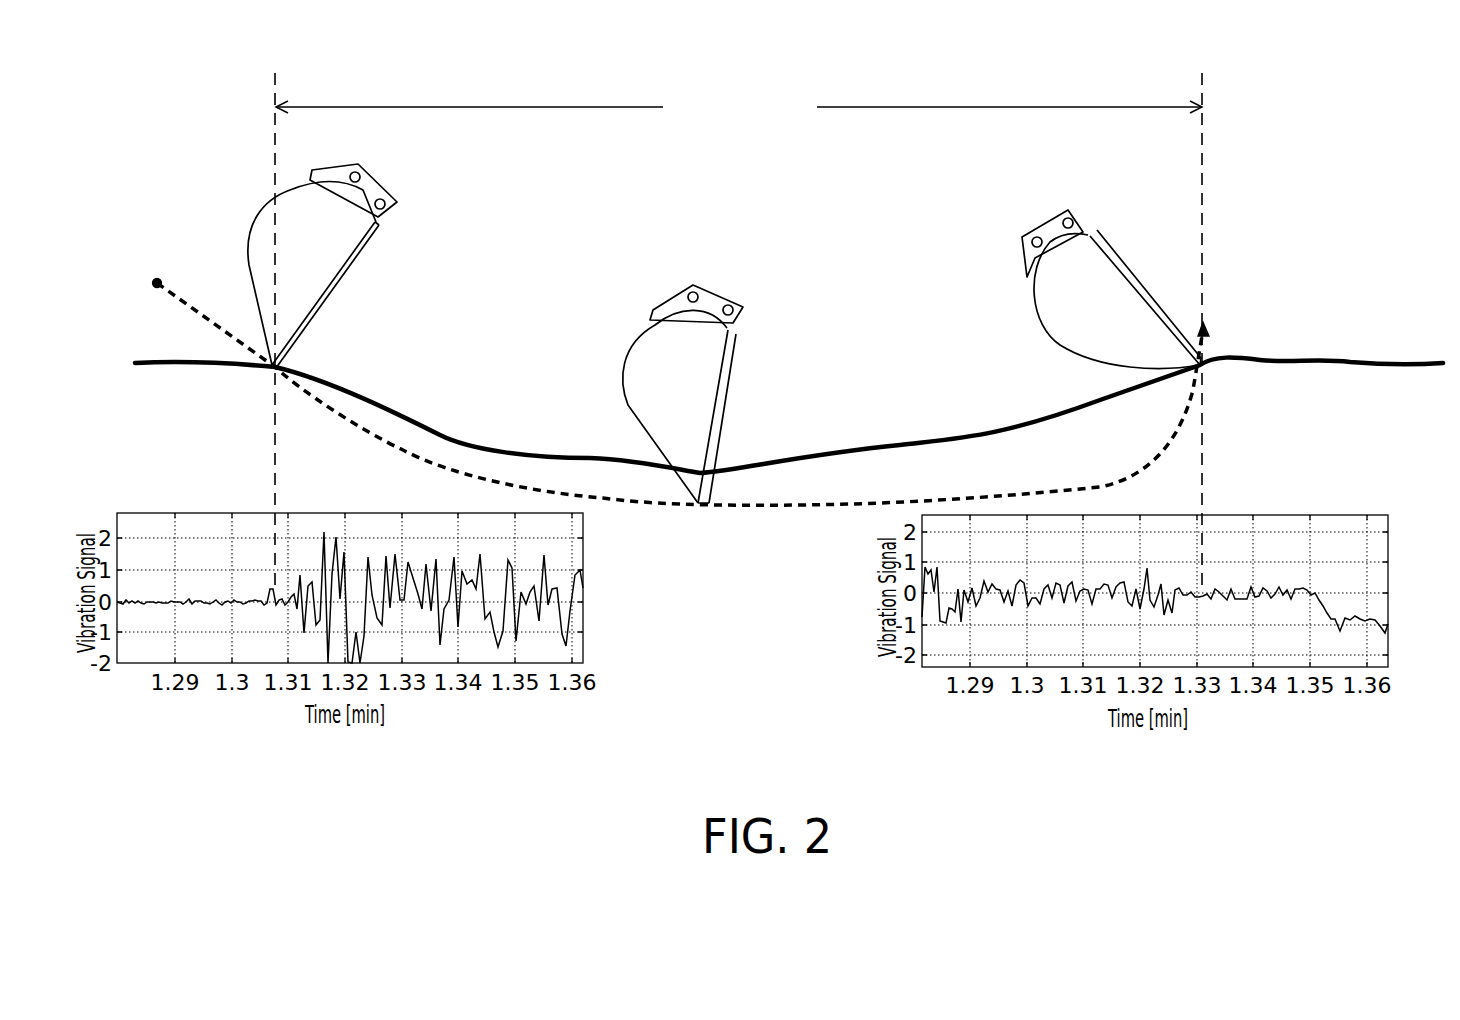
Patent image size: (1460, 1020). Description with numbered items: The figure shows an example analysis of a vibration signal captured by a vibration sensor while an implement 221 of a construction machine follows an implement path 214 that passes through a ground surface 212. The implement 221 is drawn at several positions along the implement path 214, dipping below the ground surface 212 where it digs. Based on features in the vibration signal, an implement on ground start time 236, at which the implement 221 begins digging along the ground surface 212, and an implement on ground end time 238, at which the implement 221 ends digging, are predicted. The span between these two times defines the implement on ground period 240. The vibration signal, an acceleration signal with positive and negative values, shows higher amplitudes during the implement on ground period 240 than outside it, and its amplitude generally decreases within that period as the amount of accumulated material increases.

The implement on ground period 240 is at (739, 105).
The implement 221 is at (360, 258).
The ground surface 212 is at (1413, 357).
The implement path 214 is at (1065, 490).
The implement on ground start time 236 is at (275, 468).
The implement on ground end time 238 is at (1202, 463).